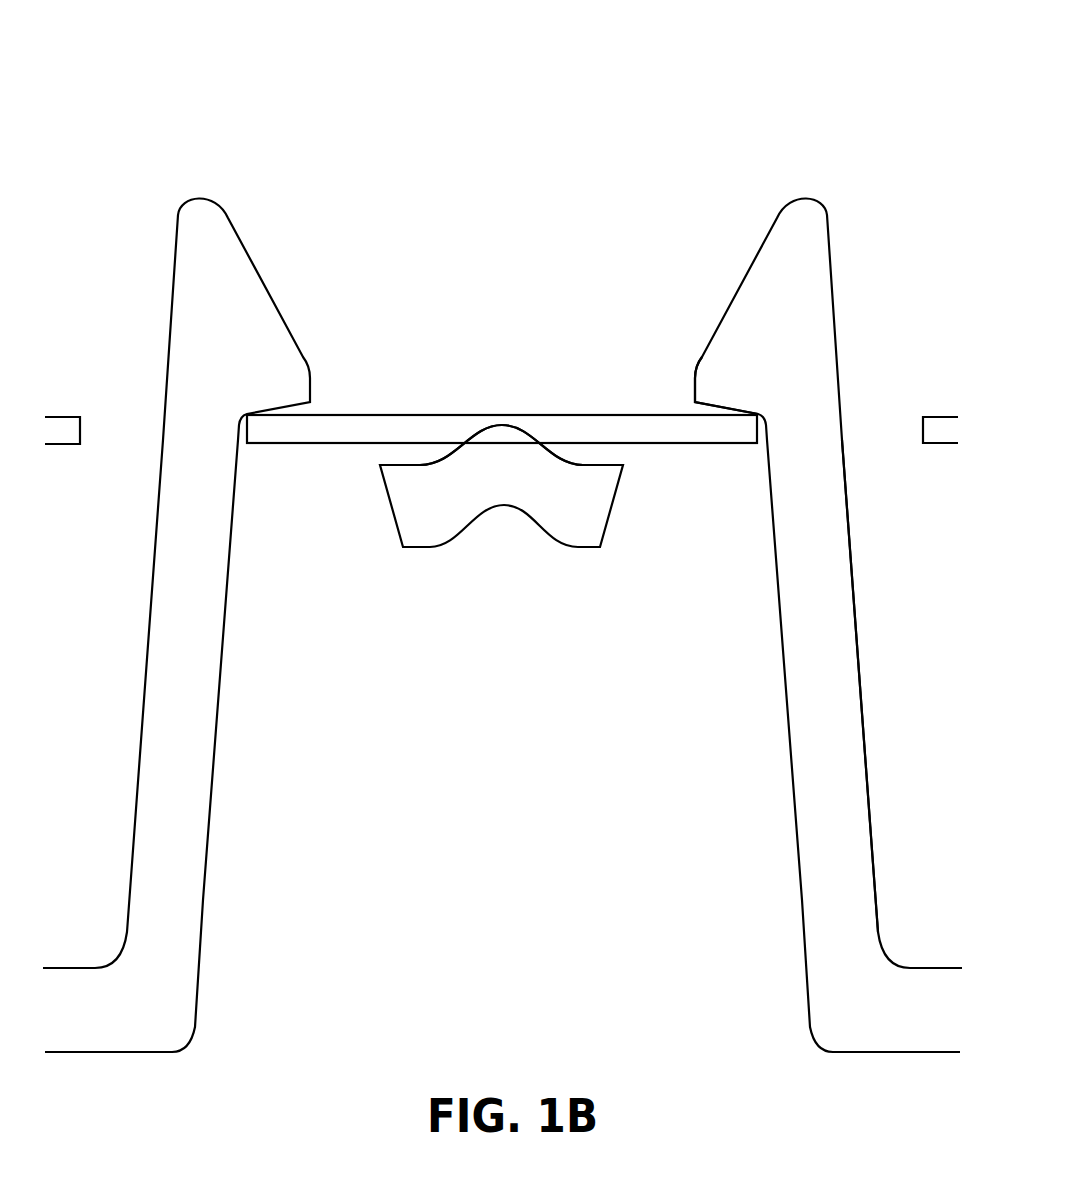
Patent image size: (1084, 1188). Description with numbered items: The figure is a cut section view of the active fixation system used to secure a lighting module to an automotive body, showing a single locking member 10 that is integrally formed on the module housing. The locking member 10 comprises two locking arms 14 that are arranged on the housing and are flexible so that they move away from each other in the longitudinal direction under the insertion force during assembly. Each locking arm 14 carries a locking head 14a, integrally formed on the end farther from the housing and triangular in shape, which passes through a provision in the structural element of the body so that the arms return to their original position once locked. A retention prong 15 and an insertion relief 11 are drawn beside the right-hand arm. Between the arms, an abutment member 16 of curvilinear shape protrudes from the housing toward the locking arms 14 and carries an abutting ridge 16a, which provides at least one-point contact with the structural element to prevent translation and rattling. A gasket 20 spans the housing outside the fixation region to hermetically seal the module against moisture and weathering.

The locking member 10 is at (135, 85).
The insertion relief 11 is at (875, 420).
The locking arm 14 is at (173, 630).
The locking head 14a is at (305, 327).
The retention prong 15 is at (723, 388).
The abutment member 16 is at (590, 526).
The abutting ridge 16a is at (517, 438).
The gasket 20 is at (268, 431).